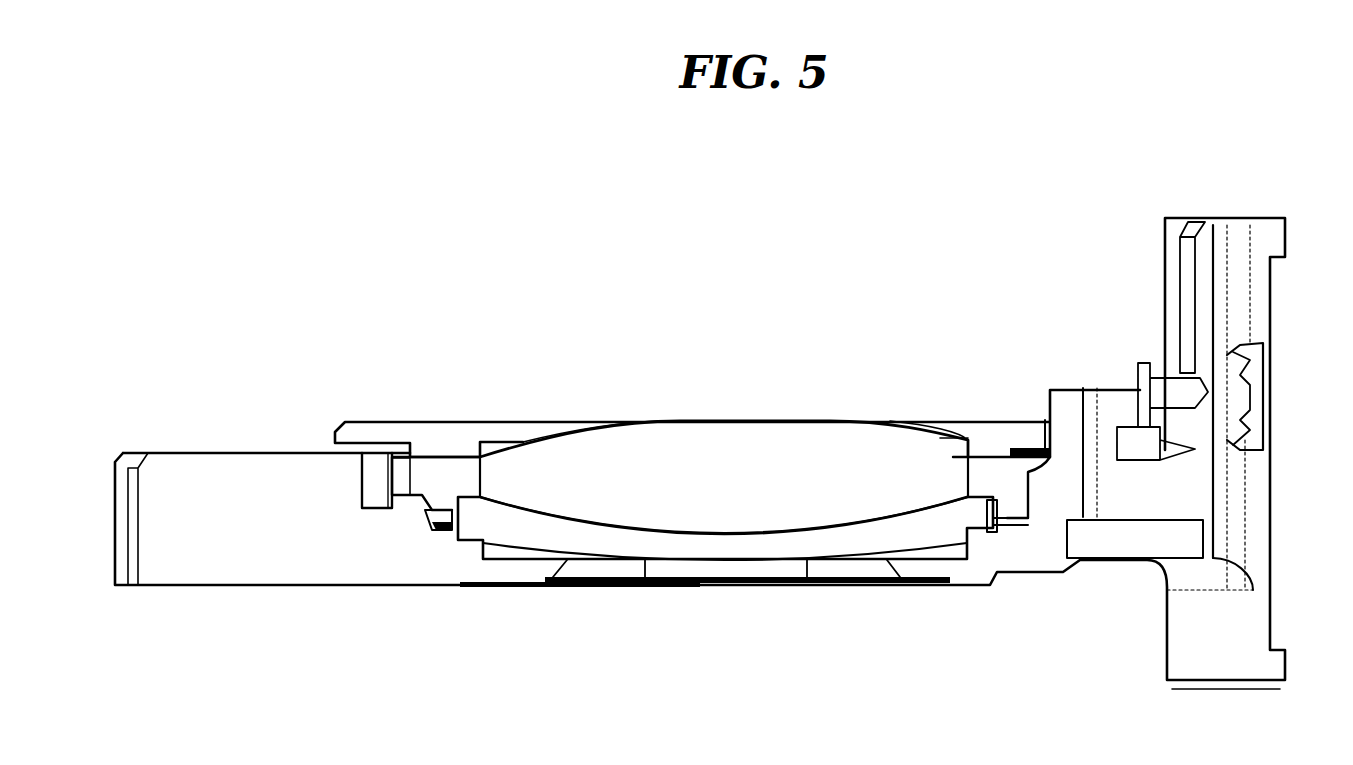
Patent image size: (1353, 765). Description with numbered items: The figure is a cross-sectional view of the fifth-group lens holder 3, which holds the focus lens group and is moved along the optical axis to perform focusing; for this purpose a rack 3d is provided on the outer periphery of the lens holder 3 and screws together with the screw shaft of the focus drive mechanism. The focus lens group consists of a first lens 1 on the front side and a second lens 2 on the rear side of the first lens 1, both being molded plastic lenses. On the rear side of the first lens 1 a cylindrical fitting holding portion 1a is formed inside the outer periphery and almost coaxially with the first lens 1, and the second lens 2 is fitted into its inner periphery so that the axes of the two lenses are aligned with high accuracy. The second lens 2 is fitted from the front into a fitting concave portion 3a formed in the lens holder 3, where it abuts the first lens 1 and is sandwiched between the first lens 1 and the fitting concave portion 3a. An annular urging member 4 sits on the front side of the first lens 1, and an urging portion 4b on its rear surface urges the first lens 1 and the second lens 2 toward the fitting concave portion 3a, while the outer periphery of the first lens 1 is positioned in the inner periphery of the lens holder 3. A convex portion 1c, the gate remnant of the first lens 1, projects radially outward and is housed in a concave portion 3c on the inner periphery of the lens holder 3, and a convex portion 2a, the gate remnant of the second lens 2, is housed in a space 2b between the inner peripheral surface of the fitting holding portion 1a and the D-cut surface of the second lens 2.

The first lens 1 is at (705, 458).
The fitting holding portion 1a is at (442, 512).
The convex portion 1c is at (408, 478).
The second lens 2 is at (693, 553).
The convex portion 2a is at (979, 522).
The space 2b is at (992, 525).
The group-5 lens holder 3 is at (335, 553).
The fitting concave portion 3a is at (472, 553).
The concave portion 3c is at (387, 478).
The rack 3d is at (1250, 402).
The urging member 4 is at (458, 442).
The urging portion 4b is at (990, 448).